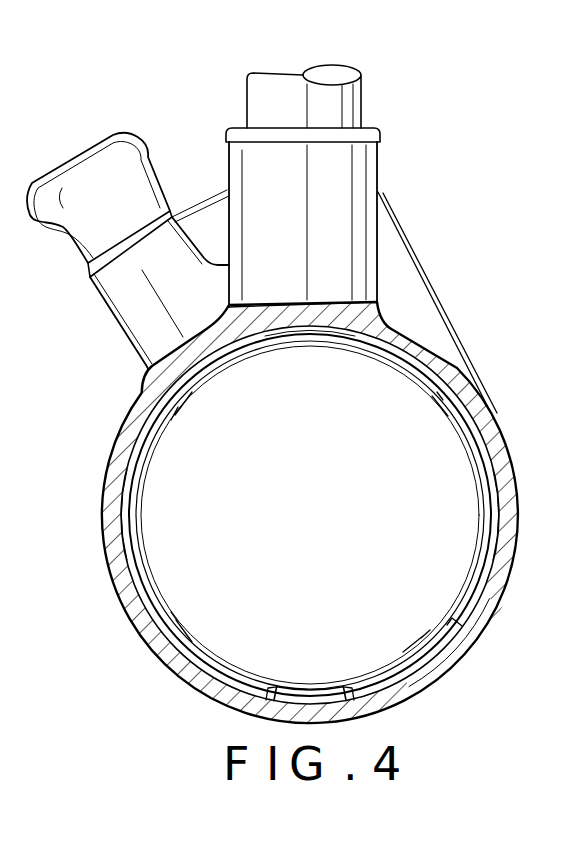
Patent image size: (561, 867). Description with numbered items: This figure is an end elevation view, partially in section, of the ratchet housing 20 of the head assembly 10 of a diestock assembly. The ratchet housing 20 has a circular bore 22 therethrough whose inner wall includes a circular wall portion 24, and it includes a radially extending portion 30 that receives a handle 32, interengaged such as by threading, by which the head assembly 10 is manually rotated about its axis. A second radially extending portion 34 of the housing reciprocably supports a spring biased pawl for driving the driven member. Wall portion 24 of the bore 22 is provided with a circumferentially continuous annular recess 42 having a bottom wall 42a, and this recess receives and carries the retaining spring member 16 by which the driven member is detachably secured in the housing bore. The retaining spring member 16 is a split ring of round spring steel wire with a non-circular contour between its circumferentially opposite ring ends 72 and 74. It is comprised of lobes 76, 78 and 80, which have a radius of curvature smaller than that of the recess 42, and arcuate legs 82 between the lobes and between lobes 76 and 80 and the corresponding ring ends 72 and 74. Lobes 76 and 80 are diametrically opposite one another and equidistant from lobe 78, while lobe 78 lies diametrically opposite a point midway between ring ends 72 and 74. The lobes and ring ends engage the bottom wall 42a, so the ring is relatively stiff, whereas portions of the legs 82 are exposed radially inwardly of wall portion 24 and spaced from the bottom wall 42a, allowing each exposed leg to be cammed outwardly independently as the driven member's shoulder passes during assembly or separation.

The head assembly 10 is at (436, 269).
The retaining spring member 16 is at (447, 434).
The ratchet housing 20 is at (132, 425).
The circular bore 22 is at (450, 457).
The circular wall portion 24 is at (307, 343).
The radially extending portion 30 is at (353, 167).
The handle 32 is at (342, 103).
The radially extending portion 34 is at (140, 310).
The annular recess 42 is at (417, 668).
The bottom wall 42a is at (457, 622).
The ring end 72 is at (270, 692).
The ring end 74 is at (347, 690).
The lobe 76 is at (123, 520).
The lobe 78 is at (308, 333).
The lobe 80 is at (498, 523).
The arcuate leg 82 is at (176, 414).